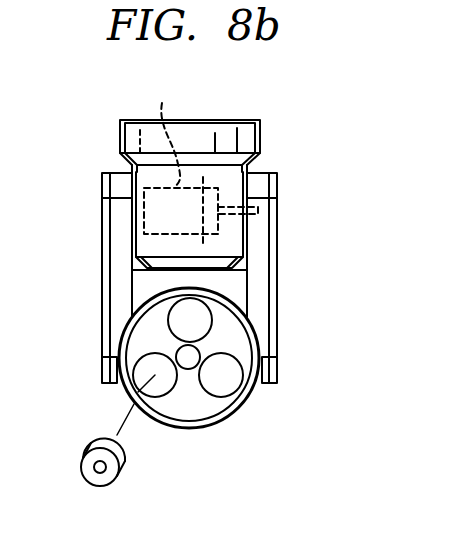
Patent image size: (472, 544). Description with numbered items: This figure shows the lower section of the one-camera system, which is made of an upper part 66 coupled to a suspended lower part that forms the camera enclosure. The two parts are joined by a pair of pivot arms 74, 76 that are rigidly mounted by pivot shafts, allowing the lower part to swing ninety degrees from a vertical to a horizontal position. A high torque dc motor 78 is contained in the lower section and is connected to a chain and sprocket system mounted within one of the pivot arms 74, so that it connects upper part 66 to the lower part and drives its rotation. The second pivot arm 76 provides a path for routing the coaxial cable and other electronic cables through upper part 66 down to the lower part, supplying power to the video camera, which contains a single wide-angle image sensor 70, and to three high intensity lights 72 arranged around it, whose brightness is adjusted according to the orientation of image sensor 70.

The upper part 66 is at (235, 230).
The image sensor 70 is at (190, 368).
The high intensity lights 72 is at (82, 458).
The pivot arm 74 is at (258, 295).
The second pivot arm 76 is at (120, 222).
The high torque dc motor 78 is at (201, 161).